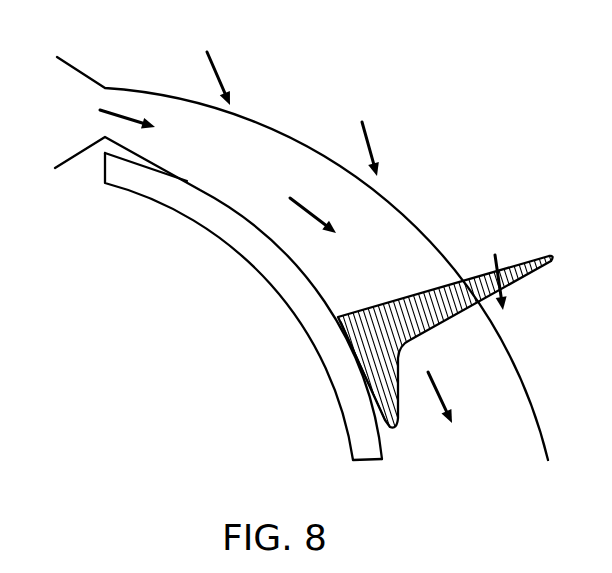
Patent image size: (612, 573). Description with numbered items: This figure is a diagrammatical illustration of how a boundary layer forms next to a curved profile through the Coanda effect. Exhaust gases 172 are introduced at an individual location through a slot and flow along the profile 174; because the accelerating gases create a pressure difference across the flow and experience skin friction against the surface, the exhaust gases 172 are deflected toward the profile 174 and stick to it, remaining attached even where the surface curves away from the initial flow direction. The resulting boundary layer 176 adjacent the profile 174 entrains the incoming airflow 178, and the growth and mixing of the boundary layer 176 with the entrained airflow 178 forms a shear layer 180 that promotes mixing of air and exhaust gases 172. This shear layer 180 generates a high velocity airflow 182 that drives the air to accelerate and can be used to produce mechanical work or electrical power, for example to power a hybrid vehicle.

The exhaust gases 172 is at (120, 118).
The profile 174 is at (270, 285).
The boundary layer 176 is at (217, 177).
The incoming airflow 178 is at (217, 72).
The shear layer 180 is at (415, 223).
The high velocity airflow 182 is at (437, 393).